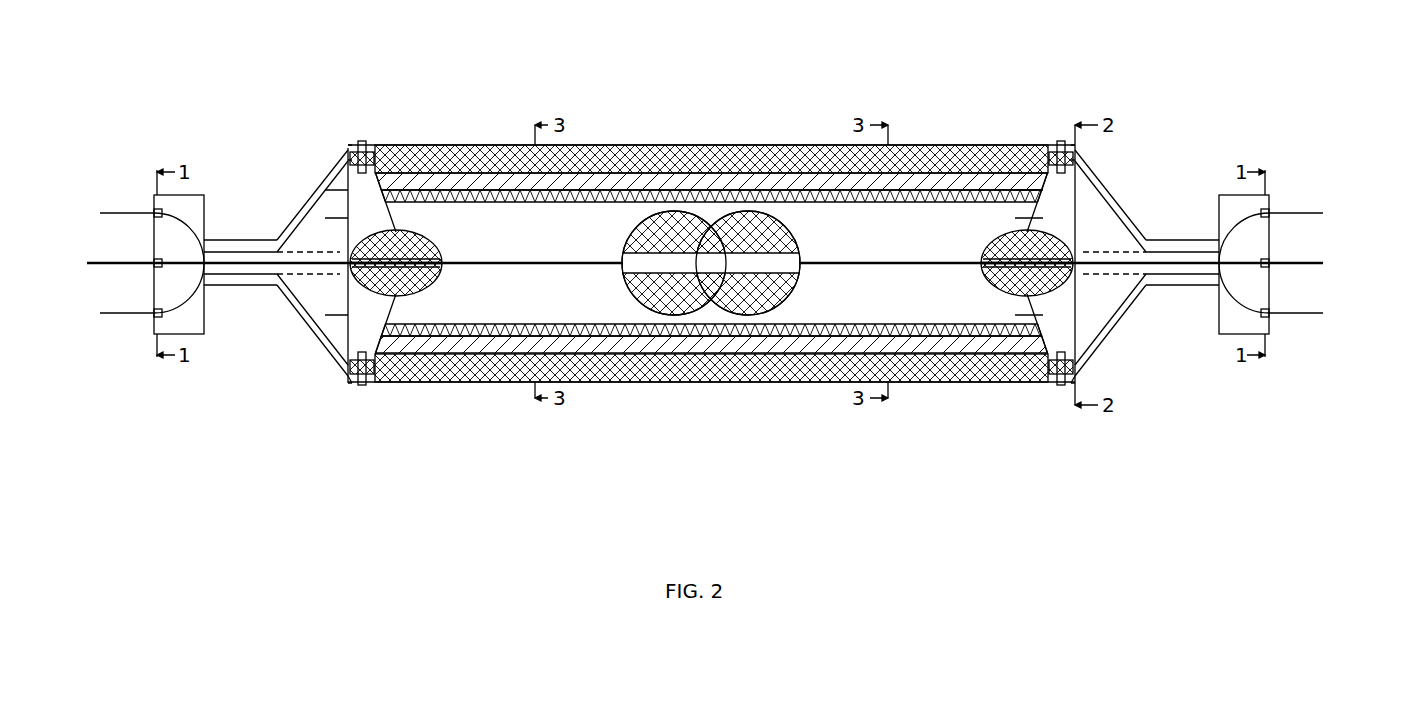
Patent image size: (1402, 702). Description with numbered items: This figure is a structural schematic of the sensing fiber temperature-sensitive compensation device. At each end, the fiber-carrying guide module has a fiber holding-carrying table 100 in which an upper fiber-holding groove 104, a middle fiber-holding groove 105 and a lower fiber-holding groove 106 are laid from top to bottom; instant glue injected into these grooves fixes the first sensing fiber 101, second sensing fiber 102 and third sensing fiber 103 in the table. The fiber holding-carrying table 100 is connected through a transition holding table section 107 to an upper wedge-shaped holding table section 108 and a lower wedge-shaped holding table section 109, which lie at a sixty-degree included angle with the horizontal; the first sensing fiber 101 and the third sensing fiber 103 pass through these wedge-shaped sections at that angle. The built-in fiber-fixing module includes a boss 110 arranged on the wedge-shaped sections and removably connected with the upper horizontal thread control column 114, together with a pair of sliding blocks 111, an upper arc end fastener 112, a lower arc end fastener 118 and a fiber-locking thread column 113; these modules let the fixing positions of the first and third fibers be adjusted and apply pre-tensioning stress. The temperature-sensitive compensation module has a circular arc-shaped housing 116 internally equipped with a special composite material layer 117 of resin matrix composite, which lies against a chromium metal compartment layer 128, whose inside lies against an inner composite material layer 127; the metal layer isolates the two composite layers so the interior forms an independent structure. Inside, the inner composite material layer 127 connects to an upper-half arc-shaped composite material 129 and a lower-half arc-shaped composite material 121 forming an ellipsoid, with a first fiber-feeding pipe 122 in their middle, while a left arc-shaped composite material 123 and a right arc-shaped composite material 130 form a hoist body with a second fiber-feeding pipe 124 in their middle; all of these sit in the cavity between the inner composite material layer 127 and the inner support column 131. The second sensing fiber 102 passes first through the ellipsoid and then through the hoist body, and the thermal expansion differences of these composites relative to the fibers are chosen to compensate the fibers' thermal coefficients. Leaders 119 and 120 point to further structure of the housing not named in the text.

The fiber holding-carrying table 100 is at (154, 202).
The first sensing fiber 101 is at (113, 212).
The second sensing fiber 102 is at (97, 263).
The third sensing fiber 103 is at (113, 312).
The upper fiber-holding groove 104 is at (155, 217).
The middle fiber-holding groove 105 is at (157, 266).
The lower fiber-holding groove 106 is at (156, 318).
The transition holding table section 107 is at (263, 241).
The upper wedge-shaped holding table section 108 is at (300, 212).
The lower wedge-shaped holding table section 109 is at (302, 318).
The boss 110 is at (348, 148).
The sliding blocks 111 is at (360, 148).
The upper arc end fastener 112 is at (350, 147).
The fiber-locking thread column 113 is at (366, 150).
The upper horizontal thread control column 114 is at (375, 158).
The circular arc-shaped housing 116 is at (525, 145).
The special composite material layer 117 is at (585, 145).
The lower arc end fastener 118 is at (348, 218).
The inner end wall 119 is at (352, 250).
The slanted channel wall 120 is at (385, 340).
The lower-half arc-shaped composite material 121 is at (442, 278).
The first fiber-feeding pipe 122 is at (442, 260).
The left arc-shaped composite material 123 is at (625, 248).
The second fiber-feeding pipe 124 is at (622, 273).
The inner composite material layer 127 is at (470, 198).
The metal compartment layer 128 is at (582, 182).
The upper-half arc-shaped composite material 129 is at (442, 252).
The right arc-shaped composite material 130 is at (800, 253).
The inner support column 131 is at (395, 342).